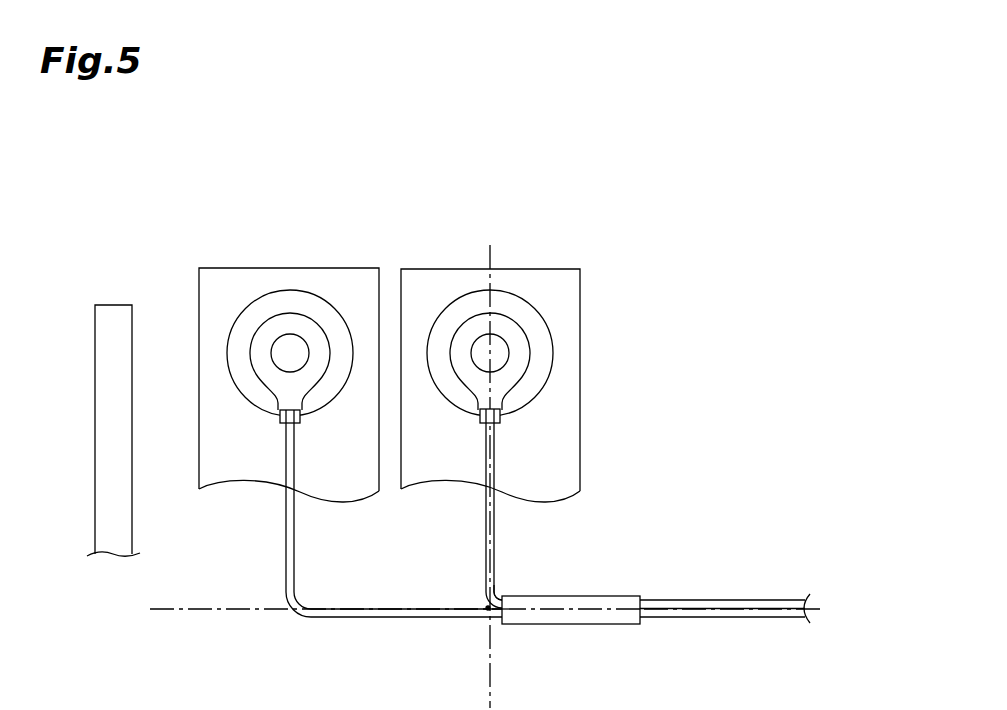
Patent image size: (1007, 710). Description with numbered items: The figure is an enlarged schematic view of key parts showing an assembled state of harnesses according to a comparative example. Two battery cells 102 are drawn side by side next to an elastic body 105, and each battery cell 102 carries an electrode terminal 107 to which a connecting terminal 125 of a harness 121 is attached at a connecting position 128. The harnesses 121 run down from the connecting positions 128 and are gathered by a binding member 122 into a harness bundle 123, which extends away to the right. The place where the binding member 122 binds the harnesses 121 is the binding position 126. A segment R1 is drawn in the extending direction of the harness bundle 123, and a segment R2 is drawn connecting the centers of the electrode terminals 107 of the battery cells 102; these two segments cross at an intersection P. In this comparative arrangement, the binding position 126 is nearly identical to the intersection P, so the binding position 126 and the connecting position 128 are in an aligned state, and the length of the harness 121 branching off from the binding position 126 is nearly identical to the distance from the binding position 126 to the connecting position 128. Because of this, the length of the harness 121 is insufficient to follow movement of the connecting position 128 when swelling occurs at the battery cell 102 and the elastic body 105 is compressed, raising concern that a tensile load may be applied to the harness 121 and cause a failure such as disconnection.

The battery cell 102 is at (335, 268).
The elastic body 105 is at (95, 338).
The electrode terminal 107 is at (228, 343).
The harness 121 is at (286, 558).
The binding member 122 is at (618, 596).
The harness bundle 123 is at (755, 579).
The connecting terminal 125 is at (252, 368).
The binding position 126 is at (498, 594).
The connecting position 128 is at (280, 418).
The intersection P is at (487, 606).
The segment in extending direction of harness bundle R1 is at (232, 612).
The segment connecting centers of electrode terminals R2 is at (490, 668).